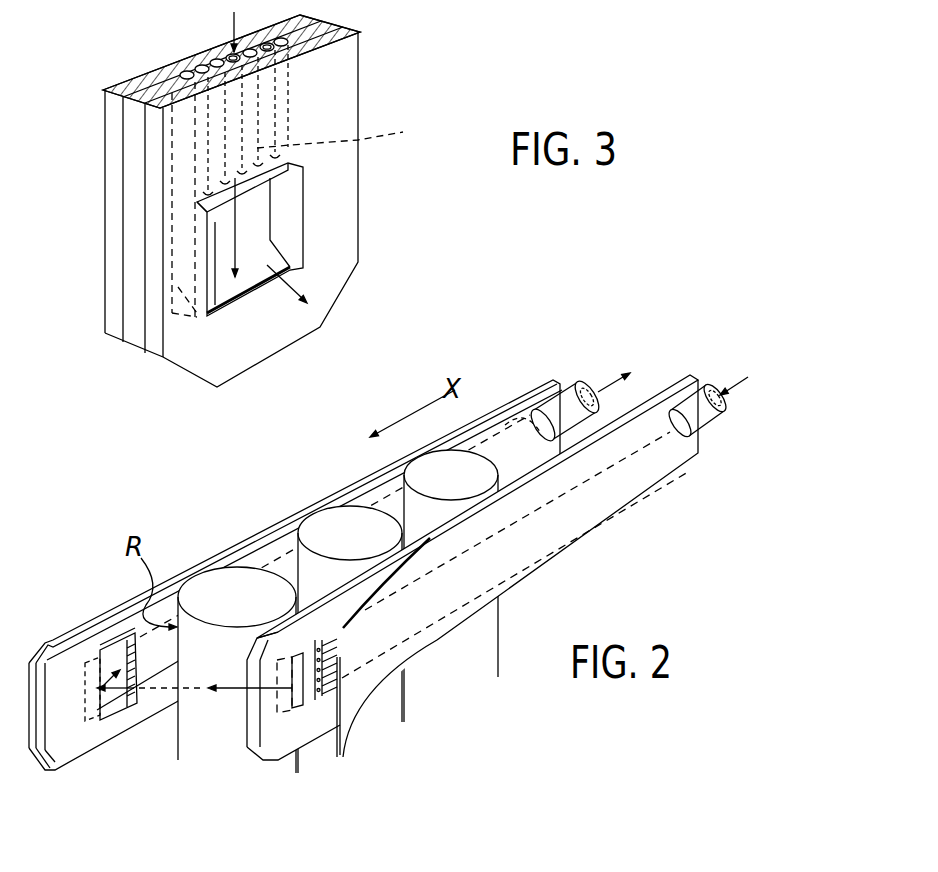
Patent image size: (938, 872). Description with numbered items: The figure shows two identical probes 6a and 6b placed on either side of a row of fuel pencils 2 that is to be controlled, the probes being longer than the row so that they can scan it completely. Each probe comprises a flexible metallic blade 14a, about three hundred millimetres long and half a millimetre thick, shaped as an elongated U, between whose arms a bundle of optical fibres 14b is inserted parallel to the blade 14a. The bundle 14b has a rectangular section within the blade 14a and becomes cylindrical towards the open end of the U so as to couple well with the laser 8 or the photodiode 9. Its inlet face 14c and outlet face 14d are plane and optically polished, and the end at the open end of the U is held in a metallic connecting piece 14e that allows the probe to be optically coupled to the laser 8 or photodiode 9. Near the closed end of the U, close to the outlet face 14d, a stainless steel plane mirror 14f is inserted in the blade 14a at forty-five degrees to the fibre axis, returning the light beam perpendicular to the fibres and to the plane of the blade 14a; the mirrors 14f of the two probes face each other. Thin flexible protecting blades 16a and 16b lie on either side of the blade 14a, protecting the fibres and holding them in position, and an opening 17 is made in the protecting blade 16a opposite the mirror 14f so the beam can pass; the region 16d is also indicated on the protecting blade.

In FIG. 2, the fuel pencils 2 is at (237, 580).
In FIG. 3, the probe 6a is at (368, 100).
In FIG. 2, the probe 6a is at (620, 510).
In FIG. 3, the probe 6b is at (231, 61).
In FIG. 2, the probe 6b is at (292, 508).
In FIG. 2, the laser 8 is at (733, 371).
In FIG. 2, the photodiode 9 is at (631, 370).
In FIG. 3, the flexible metallic blade 14a is at (135, 283).
In FIG. 2, the flexible metallic blade 14a is at (262, 758).
In FIG. 3, the bundle of optical fibres 14b is at (196, 70).
In FIG. 2, the bundle of optical fibres 14b is at (353, 640).
In FIG. 2, the inlet face 14c is at (570, 385).
In FIG. 2, the outlet face 14d is at (322, 700).
In FIG. 2, the metallic connecting piece 14e is at (705, 430).
In FIG. 3, the plane mirror 14f is at (305, 275).
In FIG. 2, the plane mirror 14f is at (194, 716).
In FIG. 3, the protecting blade 16a is at (155, 333).
In FIG. 2, the protecting blade 16a is at (253, 753).
In FIG. 3, the protecting blade 16b is at (110, 243).
In FIG. 2, the protecting blade 16b is at (45, 770).
In FIG. 2, the rail wall 16d is at (350, 715).
In FIG. 3, the opening 17 is at (302, 192).
In FIG. 2, the opening 17 is at (107, 647).